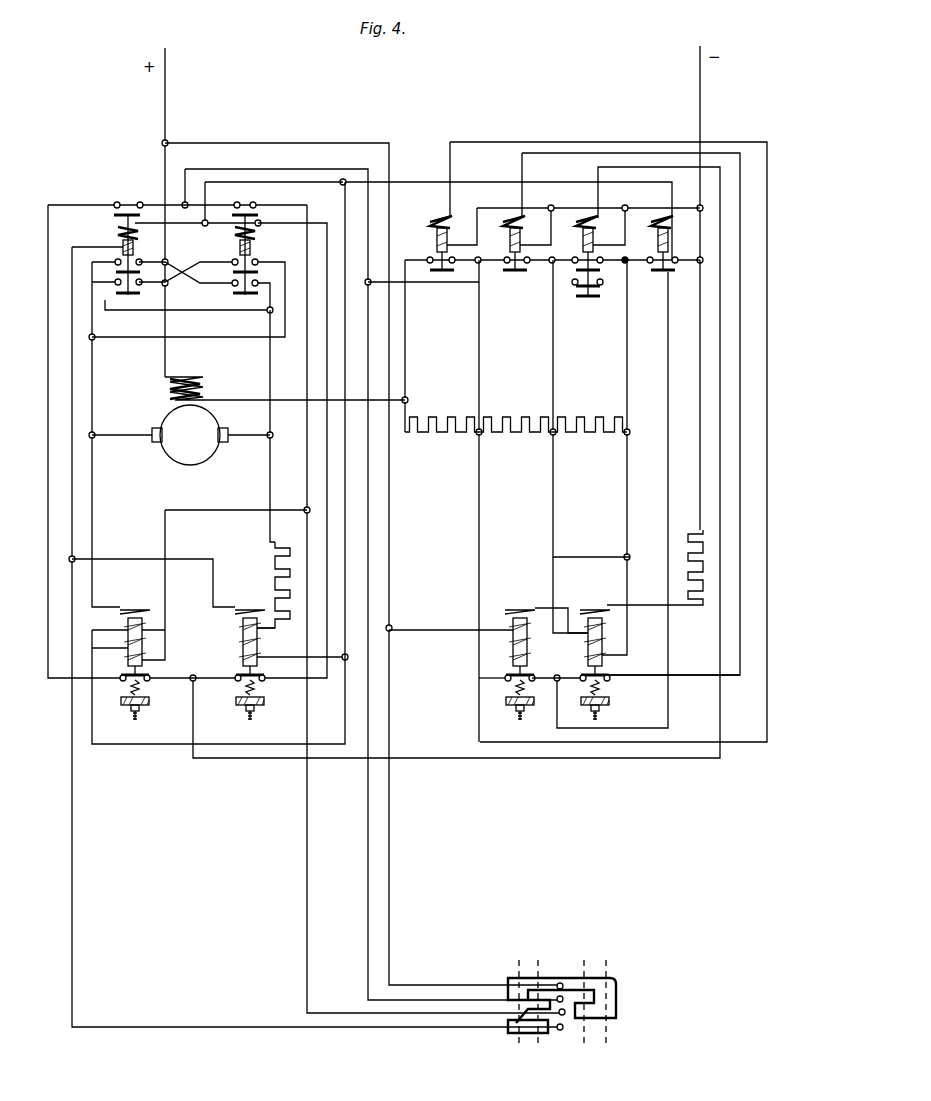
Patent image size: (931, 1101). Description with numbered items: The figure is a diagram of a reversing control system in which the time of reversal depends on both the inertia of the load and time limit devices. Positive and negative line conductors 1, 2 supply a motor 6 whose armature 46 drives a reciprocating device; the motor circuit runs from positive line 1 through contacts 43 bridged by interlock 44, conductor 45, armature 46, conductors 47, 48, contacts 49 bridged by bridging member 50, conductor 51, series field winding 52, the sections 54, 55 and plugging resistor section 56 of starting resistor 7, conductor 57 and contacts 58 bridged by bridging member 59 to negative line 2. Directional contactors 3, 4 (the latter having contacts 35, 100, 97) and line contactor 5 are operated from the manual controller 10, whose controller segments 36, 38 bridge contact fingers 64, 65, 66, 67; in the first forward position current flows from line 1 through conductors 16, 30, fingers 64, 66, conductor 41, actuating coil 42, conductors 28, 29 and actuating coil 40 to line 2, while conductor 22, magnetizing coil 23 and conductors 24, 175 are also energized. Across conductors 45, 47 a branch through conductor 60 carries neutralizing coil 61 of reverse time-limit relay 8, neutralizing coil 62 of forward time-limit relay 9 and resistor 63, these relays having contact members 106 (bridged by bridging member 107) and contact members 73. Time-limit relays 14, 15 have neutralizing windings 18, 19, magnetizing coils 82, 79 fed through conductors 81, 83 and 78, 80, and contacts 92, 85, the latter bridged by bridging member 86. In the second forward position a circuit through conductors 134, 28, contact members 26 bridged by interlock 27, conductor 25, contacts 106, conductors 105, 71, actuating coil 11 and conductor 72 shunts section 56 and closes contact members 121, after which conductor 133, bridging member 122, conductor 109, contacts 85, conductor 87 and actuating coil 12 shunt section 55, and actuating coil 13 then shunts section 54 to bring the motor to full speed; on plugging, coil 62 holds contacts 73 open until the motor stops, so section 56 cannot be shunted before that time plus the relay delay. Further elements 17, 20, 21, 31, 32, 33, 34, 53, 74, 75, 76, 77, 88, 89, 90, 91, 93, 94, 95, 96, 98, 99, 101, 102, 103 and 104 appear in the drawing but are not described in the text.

The positive line conductor 1 is at (163, 138).
The negative line conductor 2 is at (703, 138).
The directional contactor 3 is at (114, 255).
The directional contactor 4 is at (271, 253).
The line contactor 5 is at (660, 195).
The motor 6 is at (145, 415).
The starting resistor 7 is at (516, 398).
The reverse time-limit relay 8 is at (135, 649).
The forward time-limit relay 9 is at (250, 649).
The manual controller 10 is at (558, 981).
The actuating coil 11 is at (595, 240).
The actuating coil 12 is at (520, 240).
The actuating coil 13 is at (447, 240).
The time-limit relay 14 is at (520, 649).
The time-limit relay 15 is at (595, 649).
The conductor 16 is at (320, 143).
The conductor 17 is at (430, 620).
The neutralizing winding 18 is at (508, 612).
The neutralizing winding 19 is at (606, 614).
The resistor 20 is at (688, 583).
The conductor 21 is at (702, 385).
The conductor 22 is at (113, 559).
The magnetizing coil 23 is at (262, 655).
The conductor 24 is at (340, 688).
The conductor 25 is at (48, 481).
The contact members 26 is at (112, 207).
The interlock 27 is at (138, 202).
The conductor 28 is at (170, 223).
The conductor 29 is at (407, 182).
The conductor 30 is at (391, 879).
The coil 31 is at (128, 650).
The conductor 32 is at (195, 510).
The conductor 33 is at (327, 600).
The contact 34 is at (258, 215).
The contacts 35 is at (253, 205).
The controller segment 36 is at (618, 1002).
The controller segment 38 is at (508, 1034).
The actuating coil 40 is at (668, 240).
The conductor 41 is at (78, 1006).
The actuating coil 42 is at (135, 239).
The contacts 43 is at (135, 254).
The interlock 44 is at (138, 275).
The conductor 45 is at (95, 360).
The armature 46 is at (181, 435).
The conductor 47 is at (270, 383).
The conductor 48 is at (200, 310).
The contacts 49 is at (106, 272).
The bridging member 50 is at (135, 293).
The conductor 51 is at (165, 360).
The series field winding 52 is at (210, 380).
The conductor 53 is at (235, 400).
The resistor section 54 is at (430, 432).
The resistor section 55 is at (510, 432).
The plugging resistor section 56 is at (585, 432).
The conductor 57 is at (628, 305).
The contacts 58 is at (646, 260).
The bridging member 59 is at (670, 280).
The conductor 60 is at (95, 511).
The neutralizing coil 61 is at (122, 612).
The neutralizing coil 62 is at (244, 613).
The resistor 63 is at (270, 556).
The contact finger 64 is at (571, 986).
The contact finger 65 is at (571, 999).
The contact finger 66 is at (563, 1030).
The contact finger 67 is at (560, 1012).
The conductor 71 is at (455, 758).
The conductor 72 is at (553, 208).
The contact members 73 is at (264, 675).
The contact 74 is at (238, 676).
The conductor 75 is at (553, 378).
The contact 76 is at (576, 260).
The contact 77 is at (597, 287).
The conductor 78 is at (553, 507).
The magnetizing coil 79 is at (588, 651).
The conductor 80 is at (630, 643).
The conductor 81 is at (480, 550).
The magnetizing coil 82 is at (509, 646).
The conductor 83 is at (610, 555).
The contact members 85 is at (612, 685).
The bridging member 86 is at (614, 671).
The conductor 87 is at (693, 675).
The conductor 88 is at (482, 313).
The contact 89 is at (505, 260).
The conductor 90 is at (515, 277).
The spring 91 is at (532, 680).
The contacts 92 is at (501, 673).
The contact 93 is at (535, 671).
The conductor 94 is at (480, 695).
The conductor 95 is at (312, 878).
The coil 96 is at (252, 239).
The contacts 97 is at (217, 274).
The contact 98 is at (232, 300).
The conductor 99 is at (225, 337).
The contacts 100 is at (257, 264).
The contact 101 is at (258, 275).
The conductor 102 is at (405, 378).
The contact 103 is at (427, 261).
The contact 104 is at (436, 280).
The conductor 105 is at (197, 682).
The contact members 106 is at (144, 680).
The bridging member 107 is at (147, 675).
The conductor 109 is at (700, 507).
The contact members 121 is at (574, 284).
The bridging member 122 is at (598, 296).
The conductor 133 is at (405, 298).
The conductor 134 is at (368, 507).
The conductor 175 is at (125, 747).